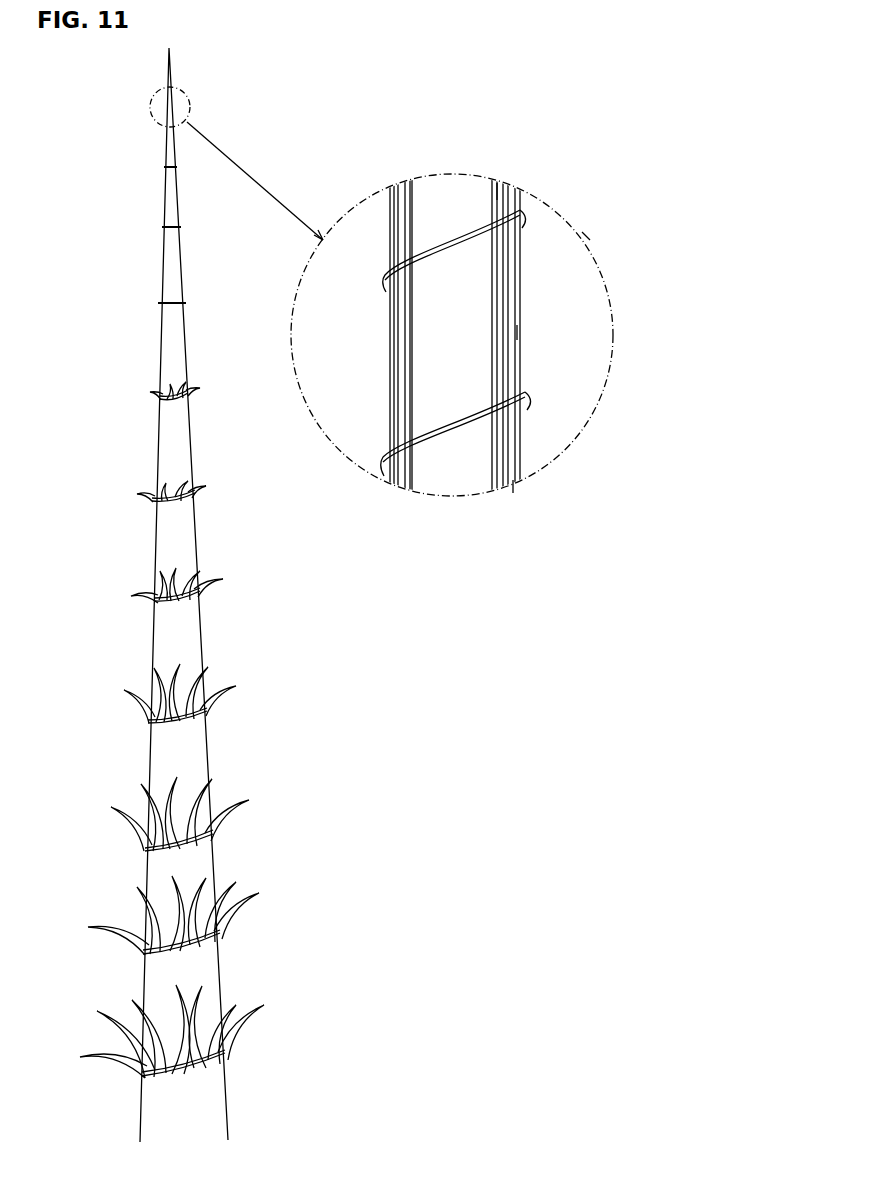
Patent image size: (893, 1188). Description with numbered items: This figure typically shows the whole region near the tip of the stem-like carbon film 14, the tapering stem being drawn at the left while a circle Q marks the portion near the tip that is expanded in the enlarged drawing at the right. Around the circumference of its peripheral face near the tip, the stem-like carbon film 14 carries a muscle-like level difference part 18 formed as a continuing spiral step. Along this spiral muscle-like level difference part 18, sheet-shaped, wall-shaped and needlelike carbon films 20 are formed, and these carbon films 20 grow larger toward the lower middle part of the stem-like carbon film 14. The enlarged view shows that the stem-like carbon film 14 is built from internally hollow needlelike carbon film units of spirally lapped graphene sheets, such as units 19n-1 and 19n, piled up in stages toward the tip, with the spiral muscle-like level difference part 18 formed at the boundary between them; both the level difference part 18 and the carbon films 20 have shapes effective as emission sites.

The stem-like carbon film 14 is at (155, 540).
The muscle-like level difference part 18 is at (188, 410).
The carbon film 20 is at (217, 577).
The needlelike carbon film unit 19n is at (517, 332).
The needlelike carbon film unit 19n-1 is at (517, 493).
The circle Q is at (582, 232).